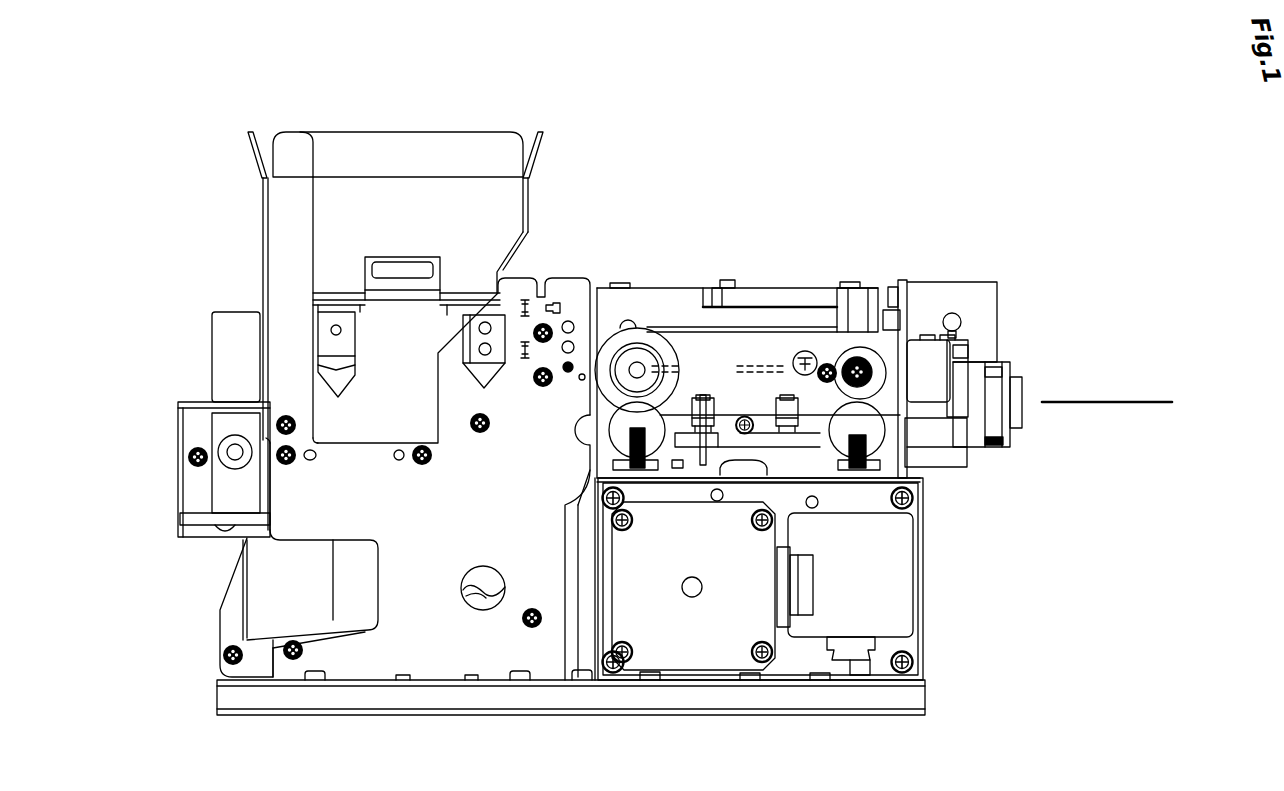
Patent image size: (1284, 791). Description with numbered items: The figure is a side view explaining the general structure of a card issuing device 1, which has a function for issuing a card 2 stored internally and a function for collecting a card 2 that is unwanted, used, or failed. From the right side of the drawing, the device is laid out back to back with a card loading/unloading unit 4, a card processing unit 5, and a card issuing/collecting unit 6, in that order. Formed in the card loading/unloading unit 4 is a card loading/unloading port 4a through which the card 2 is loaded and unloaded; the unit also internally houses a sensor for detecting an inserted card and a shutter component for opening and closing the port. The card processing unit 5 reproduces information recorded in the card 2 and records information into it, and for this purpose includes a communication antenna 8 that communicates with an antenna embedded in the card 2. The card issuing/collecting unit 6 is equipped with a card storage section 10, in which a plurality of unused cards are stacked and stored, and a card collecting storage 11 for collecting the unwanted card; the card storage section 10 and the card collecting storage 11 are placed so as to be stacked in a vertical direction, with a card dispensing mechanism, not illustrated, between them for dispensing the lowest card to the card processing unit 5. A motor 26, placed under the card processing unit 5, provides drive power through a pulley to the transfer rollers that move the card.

The card issuing device 1 is at (747, 114).
The card 2 is at (1118, 400).
The card loading/unloading unit 4 is at (950, 282).
The card loading/unloading port 4a is at (1028, 400).
The card processing unit 5 is at (797, 318).
The card issuing/collecting unit 6 is at (409, 132).
The communication antenna 8 is at (700, 532).
The card storage section 10 is at (262, 222).
The card collecting storage 11 is at (268, 586).
The motor 26 is at (745, 682).